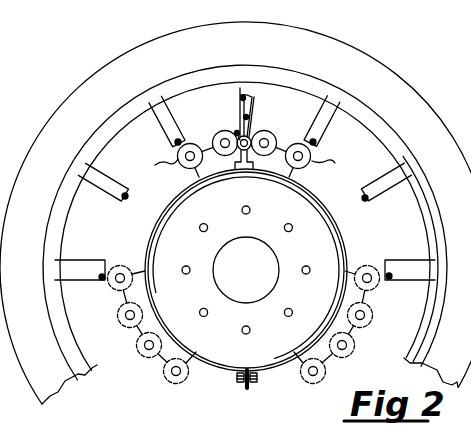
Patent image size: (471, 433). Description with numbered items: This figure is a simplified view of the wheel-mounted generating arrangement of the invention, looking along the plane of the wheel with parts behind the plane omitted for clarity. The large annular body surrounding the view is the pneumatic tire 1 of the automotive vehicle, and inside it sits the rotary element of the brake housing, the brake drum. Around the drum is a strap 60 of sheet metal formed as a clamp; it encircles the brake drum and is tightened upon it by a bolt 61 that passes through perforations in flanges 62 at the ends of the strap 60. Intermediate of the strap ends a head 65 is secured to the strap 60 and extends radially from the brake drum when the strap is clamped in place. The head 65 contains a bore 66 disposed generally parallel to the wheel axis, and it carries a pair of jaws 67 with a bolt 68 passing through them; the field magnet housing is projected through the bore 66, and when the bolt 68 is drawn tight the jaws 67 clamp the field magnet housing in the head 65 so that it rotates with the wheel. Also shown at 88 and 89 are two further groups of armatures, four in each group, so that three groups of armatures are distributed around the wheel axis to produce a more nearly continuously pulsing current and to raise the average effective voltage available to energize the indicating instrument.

The pneumatic tire 1 is at (107, 78).
The strap 60 is at (214, 368).
The bolt 61 is at (238, 376).
The flanges 62 is at (245, 389).
The head 65 is at (244, 166).
The bore 66 is at (254, 135).
The jaws 67 is at (240, 138).
The bolt 68 is at (236, 133).
The group of armatures 88 is at (343, 358).
The group of armatures 89 is at (138, 356).